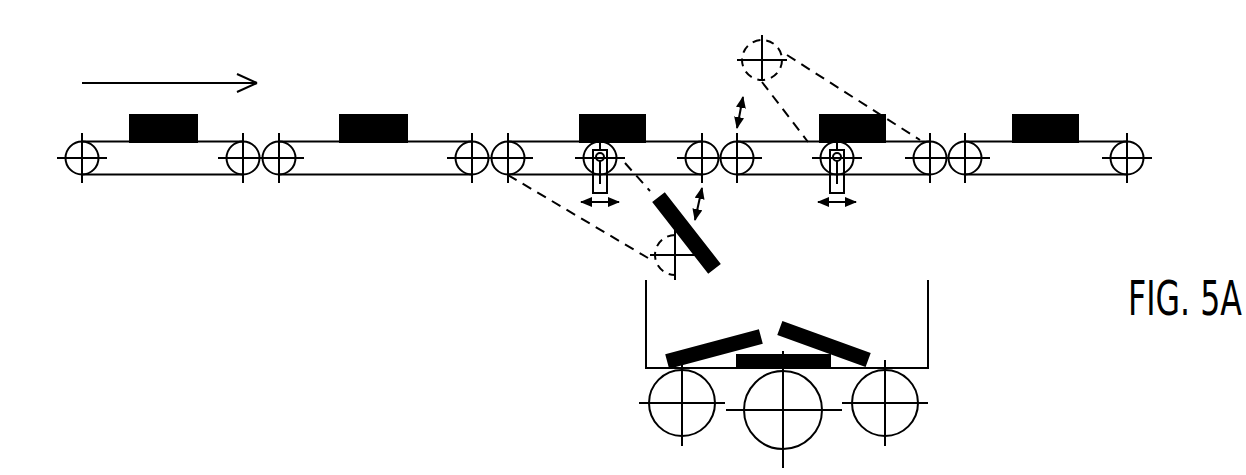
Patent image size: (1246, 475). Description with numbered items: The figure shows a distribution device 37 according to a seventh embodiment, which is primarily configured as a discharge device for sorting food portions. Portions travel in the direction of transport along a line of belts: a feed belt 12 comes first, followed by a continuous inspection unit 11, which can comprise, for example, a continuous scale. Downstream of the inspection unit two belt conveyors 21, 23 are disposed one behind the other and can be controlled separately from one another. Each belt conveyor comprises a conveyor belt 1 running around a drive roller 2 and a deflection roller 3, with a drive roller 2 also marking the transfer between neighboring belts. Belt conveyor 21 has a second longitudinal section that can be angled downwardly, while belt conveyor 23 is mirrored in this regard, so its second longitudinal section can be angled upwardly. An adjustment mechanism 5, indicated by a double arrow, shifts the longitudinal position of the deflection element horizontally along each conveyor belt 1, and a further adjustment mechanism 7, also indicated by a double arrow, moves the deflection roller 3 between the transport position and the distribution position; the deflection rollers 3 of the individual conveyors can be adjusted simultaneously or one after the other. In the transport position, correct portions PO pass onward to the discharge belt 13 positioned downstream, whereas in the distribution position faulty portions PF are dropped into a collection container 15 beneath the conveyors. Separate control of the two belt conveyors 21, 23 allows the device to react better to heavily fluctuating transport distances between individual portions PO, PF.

The conveyor belt 1 is at (660, 142).
The drive roller 2 is at (500, 148).
The deflection roller 3 is at (688, 263).
The adjustment mechanism 5 is at (603, 204).
The adjustment mechanism 7 is at (737, 112).
The continuous inspection unit 11 is at (376, 186).
The feed belt 12 is at (155, 186).
The discharge belt 13 is at (1101, 127).
The collection container 15 is at (932, 296).
The belt conveyor 21 is at (542, 118).
The belt conveyor 23 is at (838, 68).
The distribution device 37 is at (1152, 76).
The correct portions PO is at (1028, 113).
The faulty portions PF is at (825, 338).